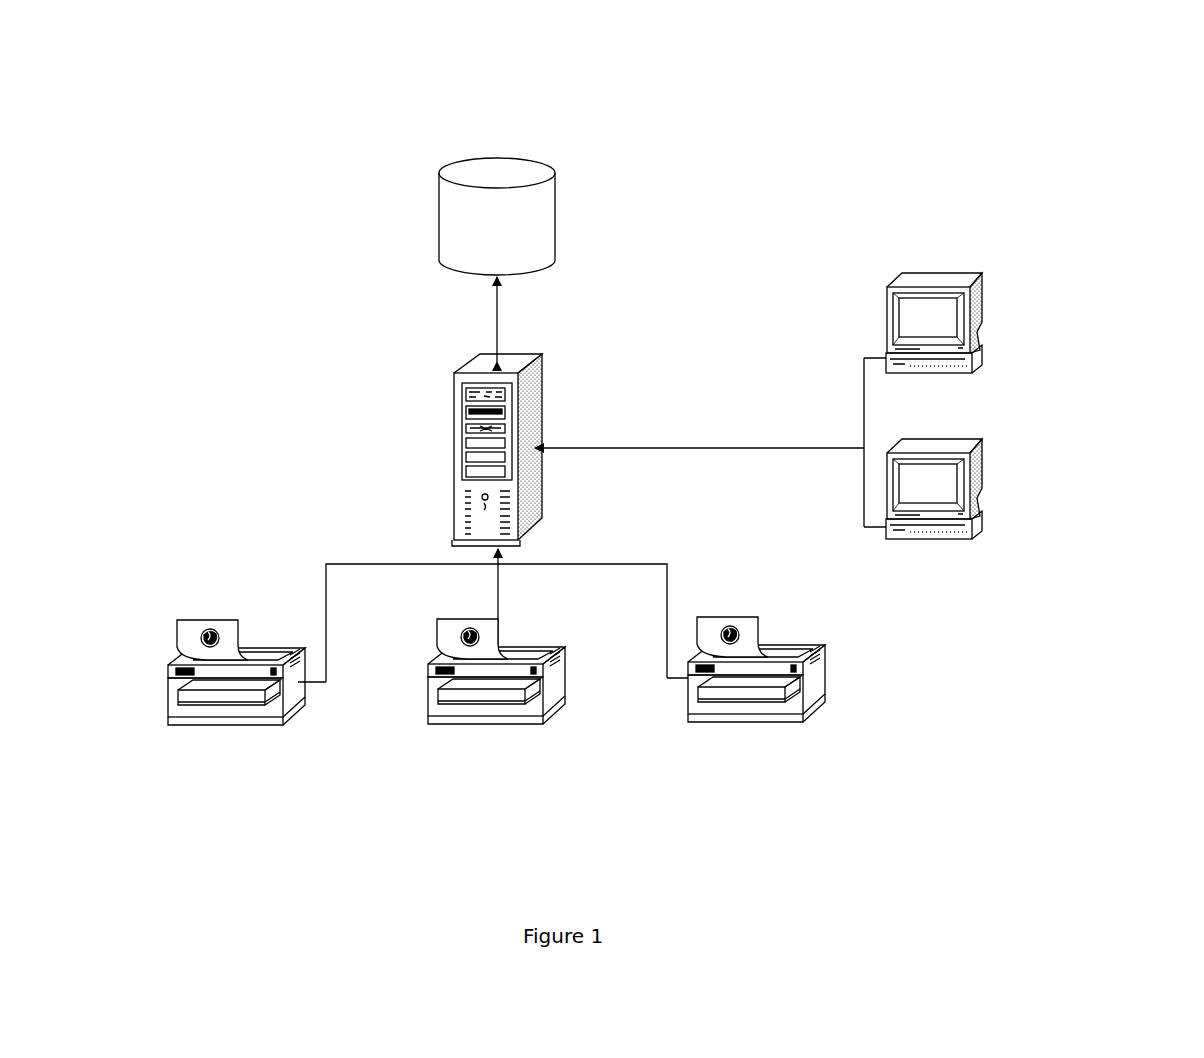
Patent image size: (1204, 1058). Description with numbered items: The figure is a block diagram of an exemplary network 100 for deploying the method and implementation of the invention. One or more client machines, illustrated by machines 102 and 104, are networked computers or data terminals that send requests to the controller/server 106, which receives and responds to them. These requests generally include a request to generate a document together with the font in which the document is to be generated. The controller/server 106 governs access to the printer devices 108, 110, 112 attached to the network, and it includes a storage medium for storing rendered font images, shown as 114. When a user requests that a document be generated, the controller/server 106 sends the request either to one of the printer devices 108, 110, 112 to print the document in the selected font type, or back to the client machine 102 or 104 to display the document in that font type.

The network 100 is at (1046, 122).
The client machine 102 is at (957, 272).
The client machine 104 is at (952, 439).
The controller/server 106 is at (518, 351).
The printer device 108 is at (255, 646).
The printer device 110 is at (540, 646).
The printer device 112 is at (800, 644).
The storage medium for rendered font images 114 is at (518, 159).